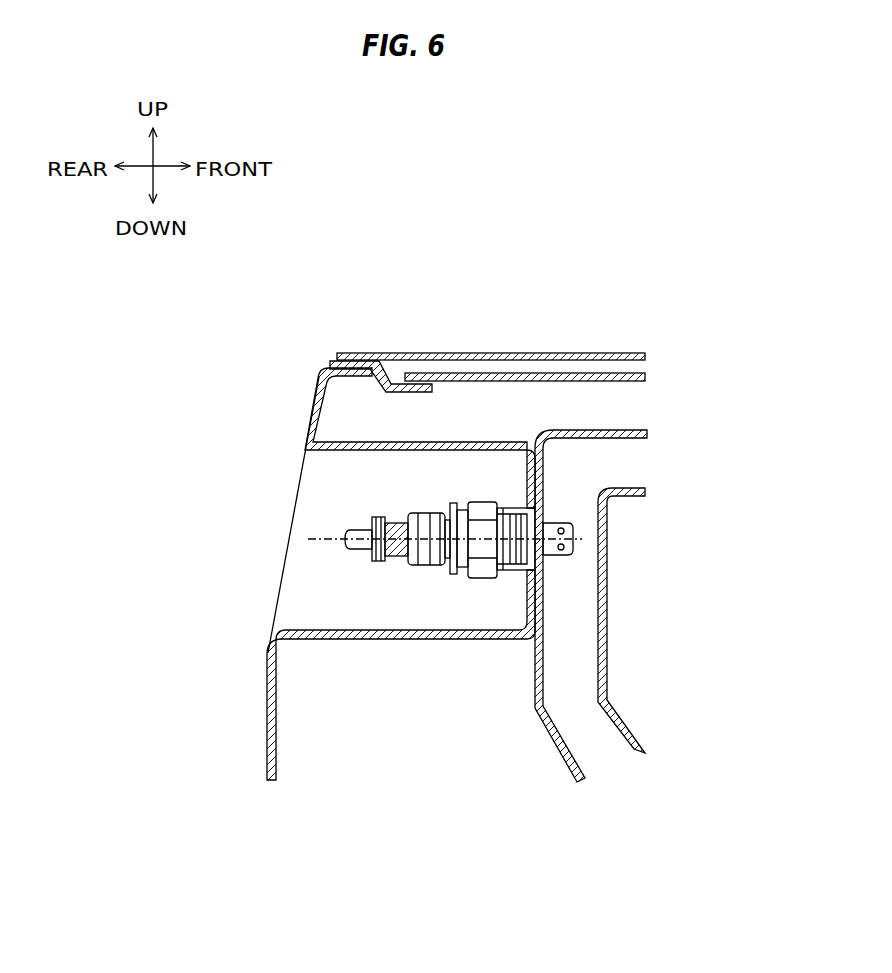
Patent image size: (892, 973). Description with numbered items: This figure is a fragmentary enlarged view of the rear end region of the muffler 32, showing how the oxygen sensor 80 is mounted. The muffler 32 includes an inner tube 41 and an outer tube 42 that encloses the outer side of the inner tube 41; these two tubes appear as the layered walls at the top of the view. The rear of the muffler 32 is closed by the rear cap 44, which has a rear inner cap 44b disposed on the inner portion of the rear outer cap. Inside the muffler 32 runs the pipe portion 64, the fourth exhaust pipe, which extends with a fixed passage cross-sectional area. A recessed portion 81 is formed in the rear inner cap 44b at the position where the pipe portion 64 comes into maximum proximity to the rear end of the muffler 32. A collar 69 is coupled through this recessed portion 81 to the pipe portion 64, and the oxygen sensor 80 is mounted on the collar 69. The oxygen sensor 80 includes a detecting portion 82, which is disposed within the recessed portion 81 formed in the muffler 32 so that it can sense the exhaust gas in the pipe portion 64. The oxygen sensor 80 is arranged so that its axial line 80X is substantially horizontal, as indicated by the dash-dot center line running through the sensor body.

The muffler 32 is at (377, 349).
The inner tube 41 is at (590, 374).
The outer tube 42 is at (634, 352).
The rear cap 44 is at (252, 515).
The rear inner cap 44b is at (318, 393).
The pipe portion 64 is at (586, 427).
The collar 69 is at (520, 508).
The oxygen sensor 80 is at (486, 527).
The axial line 80X is at (322, 541).
The recessed portion 81 is at (340, 450).
The detecting portion 82 is at (570, 521).